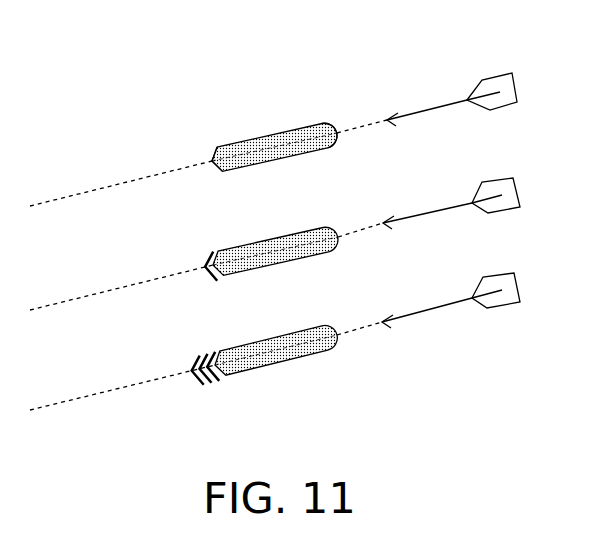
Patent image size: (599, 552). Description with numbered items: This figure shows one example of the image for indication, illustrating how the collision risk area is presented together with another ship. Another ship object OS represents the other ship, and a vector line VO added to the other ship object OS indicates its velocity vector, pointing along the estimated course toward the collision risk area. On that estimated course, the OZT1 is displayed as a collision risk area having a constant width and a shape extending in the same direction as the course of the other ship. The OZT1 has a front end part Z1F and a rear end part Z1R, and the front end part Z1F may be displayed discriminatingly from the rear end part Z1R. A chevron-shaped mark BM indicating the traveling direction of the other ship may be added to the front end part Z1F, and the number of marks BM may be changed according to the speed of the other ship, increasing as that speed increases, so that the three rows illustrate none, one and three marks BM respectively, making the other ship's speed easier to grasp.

The OZT1 collision risk area OZT1 is at (267, 135).
The front end part of the OZT1 Z1F is at (216, 148).
The rear end part of the OZT1 Z1R is at (331, 125).
The vector line VO is at (432, 108).
The another ship object OS is at (509, 74).
The mark BM is at (197, 380).